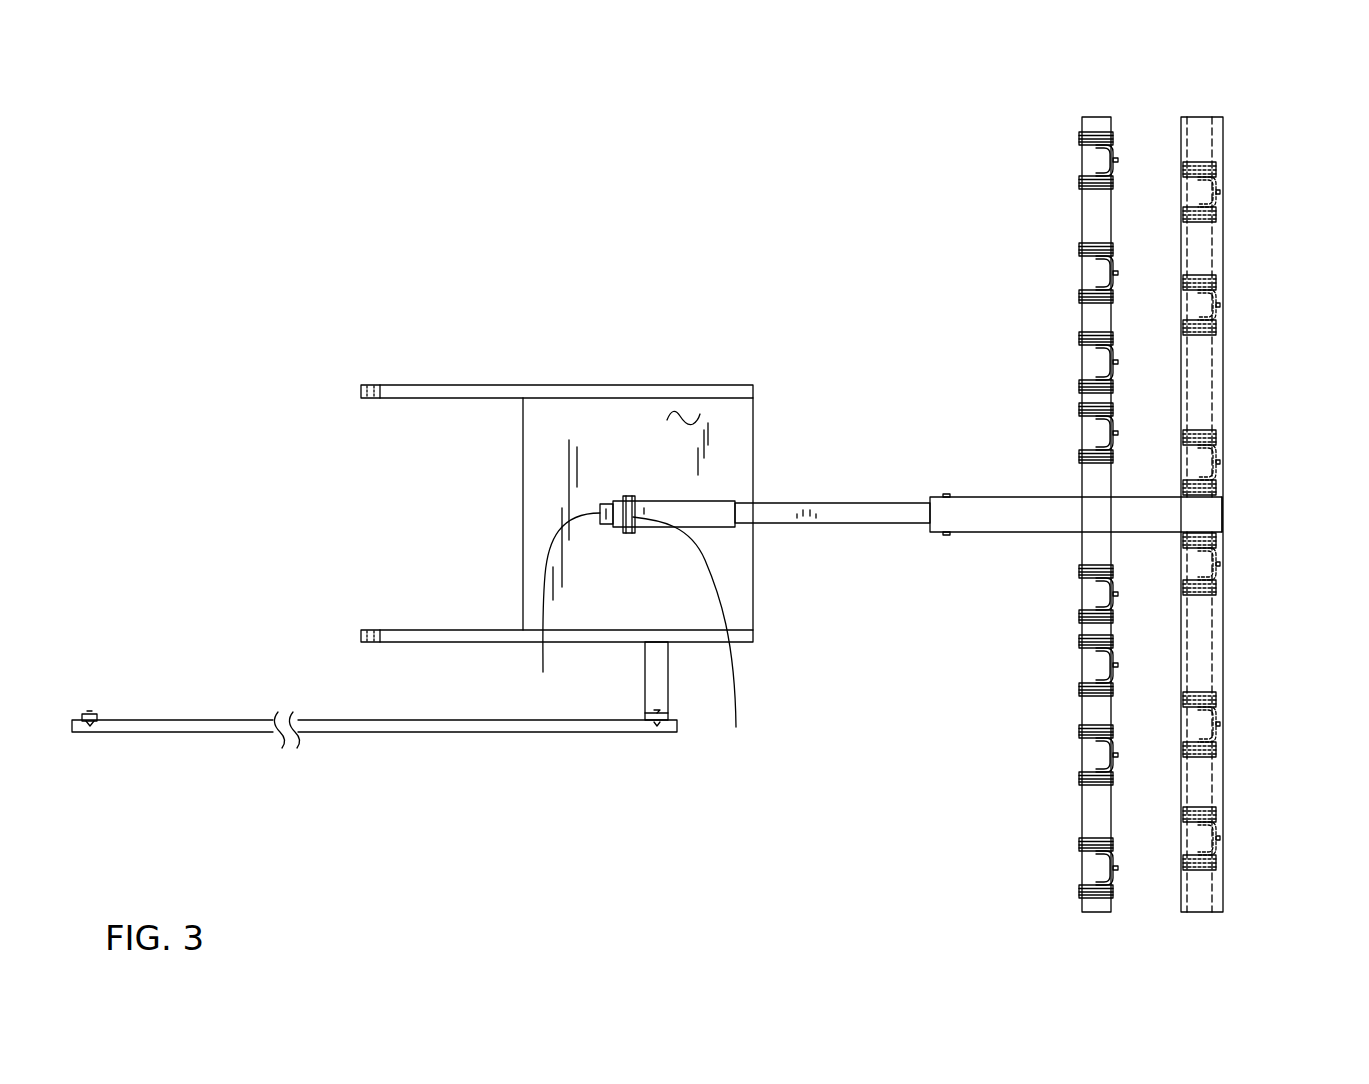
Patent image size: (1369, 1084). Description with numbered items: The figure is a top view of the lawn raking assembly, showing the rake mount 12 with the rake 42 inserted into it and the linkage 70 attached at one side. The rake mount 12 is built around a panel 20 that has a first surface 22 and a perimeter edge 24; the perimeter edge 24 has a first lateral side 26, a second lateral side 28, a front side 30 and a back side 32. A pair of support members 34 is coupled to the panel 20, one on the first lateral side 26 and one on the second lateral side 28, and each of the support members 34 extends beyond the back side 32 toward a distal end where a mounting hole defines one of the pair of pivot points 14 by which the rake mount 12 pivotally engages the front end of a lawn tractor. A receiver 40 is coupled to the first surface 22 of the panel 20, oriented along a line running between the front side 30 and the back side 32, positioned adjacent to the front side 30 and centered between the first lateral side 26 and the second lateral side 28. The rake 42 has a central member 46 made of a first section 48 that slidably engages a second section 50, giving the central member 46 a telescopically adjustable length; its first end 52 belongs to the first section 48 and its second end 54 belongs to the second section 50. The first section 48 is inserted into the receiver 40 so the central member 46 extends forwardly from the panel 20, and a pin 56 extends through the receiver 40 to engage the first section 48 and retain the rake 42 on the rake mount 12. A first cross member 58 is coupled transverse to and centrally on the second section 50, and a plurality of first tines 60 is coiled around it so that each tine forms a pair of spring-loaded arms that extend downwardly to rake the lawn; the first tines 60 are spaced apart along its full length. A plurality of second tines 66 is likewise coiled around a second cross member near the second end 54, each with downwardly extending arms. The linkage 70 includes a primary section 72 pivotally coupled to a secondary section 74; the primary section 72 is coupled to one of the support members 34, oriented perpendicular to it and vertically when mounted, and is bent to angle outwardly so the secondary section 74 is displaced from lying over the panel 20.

The rake mount 12 is at (558, 474).
The pivot points 14 is at (371, 376).
The panel 20 is at (612, 481).
The first surface 22 is at (683, 410).
The perimeter edge 24 is at (743, 642).
The first lateral side 26 is at (610, 642).
The second lateral side 28 is at (558, 387).
The front side 30 is at (523, 437).
The back side 32 is at (754, 460).
The support members 34 is at (445, 385).
The receiver 40 is at (735, 528).
The rake 42 is at (1073, 477).
The central member 46 is at (920, 540).
The first section 48 is at (858, 503).
The second section 50 is at (1017, 497).
The first end 52 is at (560, 613).
The second end 54 is at (1222, 510).
The pin 56 is at (696, 642).
The first cross member 58 is at (1082, 157).
The first tines 60 is at (1113, 181).
The second tines 66 is at (1205, 275).
The linkage 70 is at (392, 747).
The primary section 72 is at (657, 688).
The secondary section 74 is at (395, 732).